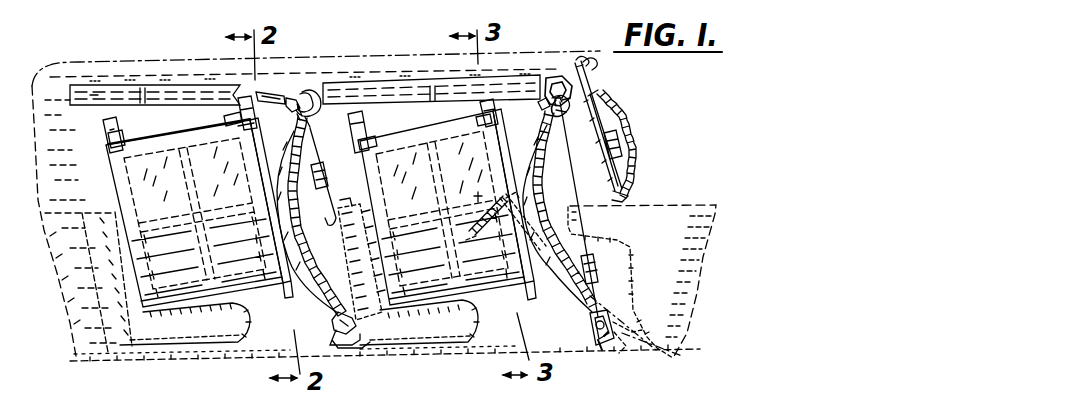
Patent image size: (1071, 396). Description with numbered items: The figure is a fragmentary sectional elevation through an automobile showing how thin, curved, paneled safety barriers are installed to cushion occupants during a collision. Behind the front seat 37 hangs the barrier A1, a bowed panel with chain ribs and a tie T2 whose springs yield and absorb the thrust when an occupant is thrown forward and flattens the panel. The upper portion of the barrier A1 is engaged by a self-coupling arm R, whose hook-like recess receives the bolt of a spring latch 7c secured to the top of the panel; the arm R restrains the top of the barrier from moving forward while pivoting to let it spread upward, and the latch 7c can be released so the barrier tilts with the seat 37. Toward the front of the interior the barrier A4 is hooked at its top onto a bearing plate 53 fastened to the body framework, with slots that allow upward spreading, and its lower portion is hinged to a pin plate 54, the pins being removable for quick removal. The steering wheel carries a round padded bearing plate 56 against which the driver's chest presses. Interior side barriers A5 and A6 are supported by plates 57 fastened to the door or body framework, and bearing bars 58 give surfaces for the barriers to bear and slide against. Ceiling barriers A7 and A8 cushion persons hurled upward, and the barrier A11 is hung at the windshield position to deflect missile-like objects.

The ceiling barrier A8 is at (96, 110).
The rear interior side barrier A6 is at (114, 185).
The ceiling barrier A7 is at (440, 102).
The plates 57 is at (108, 138).
The spring latch 7c is at (125, 140).
The self-coupling arm R is at (274, 106).
The barrier A1 is at (317, 308).
The front seat 37 is at (343, 180).
The tie T2 is at (332, 172).
The bearing plate 56 is at (506, 209).
The bearing bars 58 is at (150, 322).
The bearing plates 53 is at (553, 80).
The windshield barrier A11 is at (641, 153).
The interior side barrier A5 is at (533, 270).
The forward interior barrier A4 is at (580, 305).
The pin plates 54 is at (604, 348).